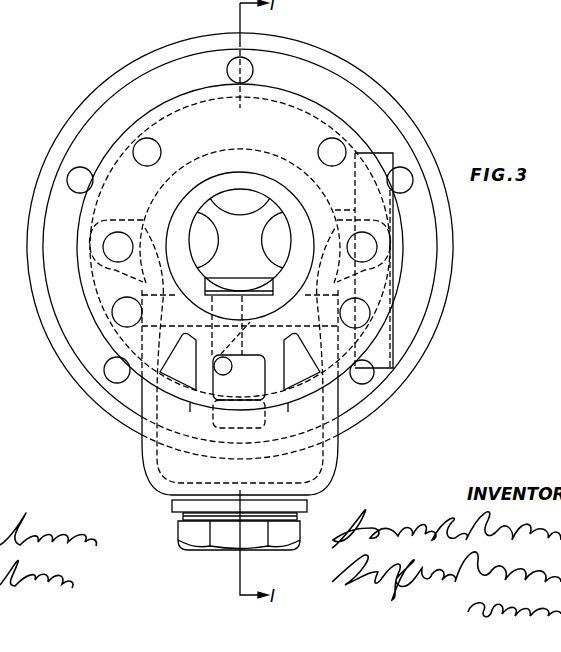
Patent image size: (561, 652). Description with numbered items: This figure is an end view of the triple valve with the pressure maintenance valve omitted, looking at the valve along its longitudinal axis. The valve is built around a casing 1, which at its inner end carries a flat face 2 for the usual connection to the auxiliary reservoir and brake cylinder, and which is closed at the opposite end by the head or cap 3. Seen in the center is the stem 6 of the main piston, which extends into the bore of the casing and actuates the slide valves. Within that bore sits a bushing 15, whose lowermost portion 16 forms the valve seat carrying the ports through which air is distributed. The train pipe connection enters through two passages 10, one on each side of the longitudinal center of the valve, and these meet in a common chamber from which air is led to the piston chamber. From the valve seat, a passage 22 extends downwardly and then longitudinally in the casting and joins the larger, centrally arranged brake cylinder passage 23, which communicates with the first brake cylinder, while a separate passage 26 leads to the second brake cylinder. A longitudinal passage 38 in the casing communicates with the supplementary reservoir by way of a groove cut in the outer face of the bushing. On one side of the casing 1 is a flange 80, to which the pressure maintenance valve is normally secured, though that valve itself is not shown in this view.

The casing 1 is at (306, 100).
The flat face 2 is at (303, 132).
The head or cap 3 is at (330, 54).
The stem 6 is at (240, 240).
The train pipe passages 10 is at (240, 361).
The bushing 15 is at (238, 178).
The lowermost portion of bushing 16 is at (232, 295).
The passage 22 is at (233, 366).
The brake cylinder passage 23 is at (239, 375).
The passage 26 is at (116, 251).
The longitudinal passage 38 is at (363, 251).
The flange 80 is at (388, 333).